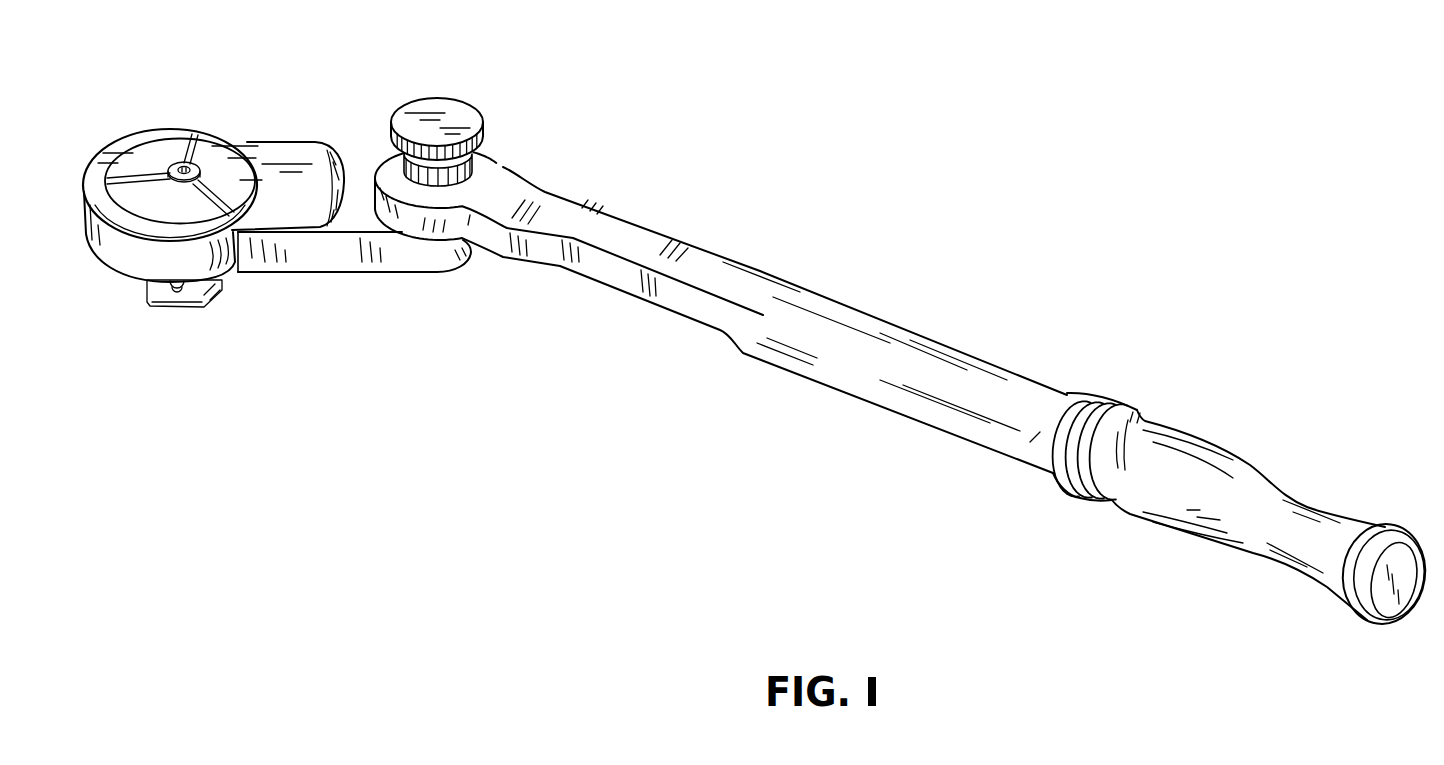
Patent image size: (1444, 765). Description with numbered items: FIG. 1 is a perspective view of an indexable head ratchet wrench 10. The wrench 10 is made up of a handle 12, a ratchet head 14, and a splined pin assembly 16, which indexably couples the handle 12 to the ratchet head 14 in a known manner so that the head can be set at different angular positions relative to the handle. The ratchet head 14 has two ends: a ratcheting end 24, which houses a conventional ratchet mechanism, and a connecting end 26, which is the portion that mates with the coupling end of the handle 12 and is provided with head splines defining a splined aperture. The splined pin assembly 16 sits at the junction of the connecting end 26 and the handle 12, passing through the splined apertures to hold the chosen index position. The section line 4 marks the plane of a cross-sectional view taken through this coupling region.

The ratchet wrench 10 is at (547, 575).
The handle 12 is at (1012, 362).
The plate 14 is at (297, 255).
The knob 16 is at (458, 122).
The ratchet head 24 is at (153, 267).
The pivot end of plate 26 is at (436, 253).
The section line 4- 4 is at (335, 93).